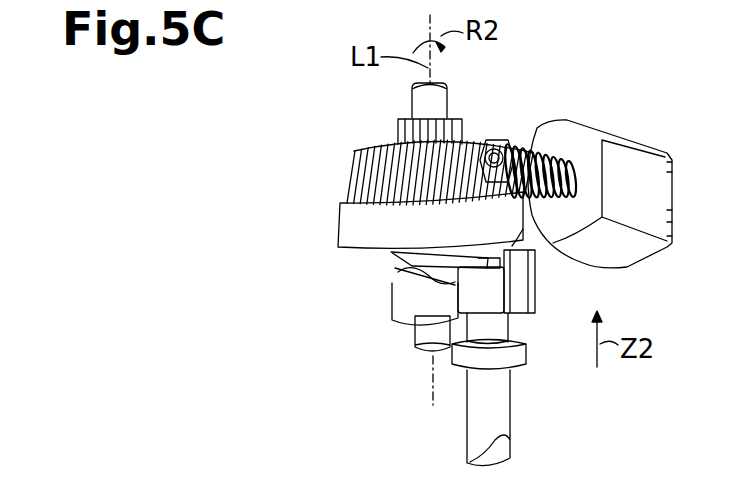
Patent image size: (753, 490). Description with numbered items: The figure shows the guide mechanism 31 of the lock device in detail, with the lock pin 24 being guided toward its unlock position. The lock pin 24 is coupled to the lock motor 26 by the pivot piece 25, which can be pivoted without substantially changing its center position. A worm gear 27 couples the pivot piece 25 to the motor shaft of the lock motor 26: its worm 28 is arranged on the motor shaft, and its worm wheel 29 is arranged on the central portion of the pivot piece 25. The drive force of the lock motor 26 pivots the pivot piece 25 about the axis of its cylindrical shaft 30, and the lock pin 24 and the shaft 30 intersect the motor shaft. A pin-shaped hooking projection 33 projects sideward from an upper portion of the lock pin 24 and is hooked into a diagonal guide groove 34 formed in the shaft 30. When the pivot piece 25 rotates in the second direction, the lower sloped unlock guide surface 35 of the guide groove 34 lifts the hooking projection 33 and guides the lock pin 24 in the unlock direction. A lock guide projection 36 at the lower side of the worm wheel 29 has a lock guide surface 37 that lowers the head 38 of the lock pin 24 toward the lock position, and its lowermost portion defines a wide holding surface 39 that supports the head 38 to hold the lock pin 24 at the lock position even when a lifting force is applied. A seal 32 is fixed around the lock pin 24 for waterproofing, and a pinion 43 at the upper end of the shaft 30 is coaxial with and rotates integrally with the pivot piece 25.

The lock pin 24 is at (512, 403).
The pivot piece 25 is at (340, 220).
The lock motor 26 is at (637, 138).
The worm gear 27 is at (553, 88).
The worm 28 is at (542, 142).
The worm wheel 29 is at (474, 144).
The shaft 30 is at (412, 104).
The guide mechanism 31 is at (323, 312).
The seal 32 is at (526, 349).
The hooking projection 33 is at (394, 300).
The guide groove 34 is at (420, 283).
The unlock guide surface 35 is at (402, 273).
The lock guide projection 36 is at (523, 229).
The lock guide surface 37 is at (434, 253).
The head 38 is at (493, 283).
The holding surface 39 is at (484, 258).
The pinion 43 is at (400, 133).